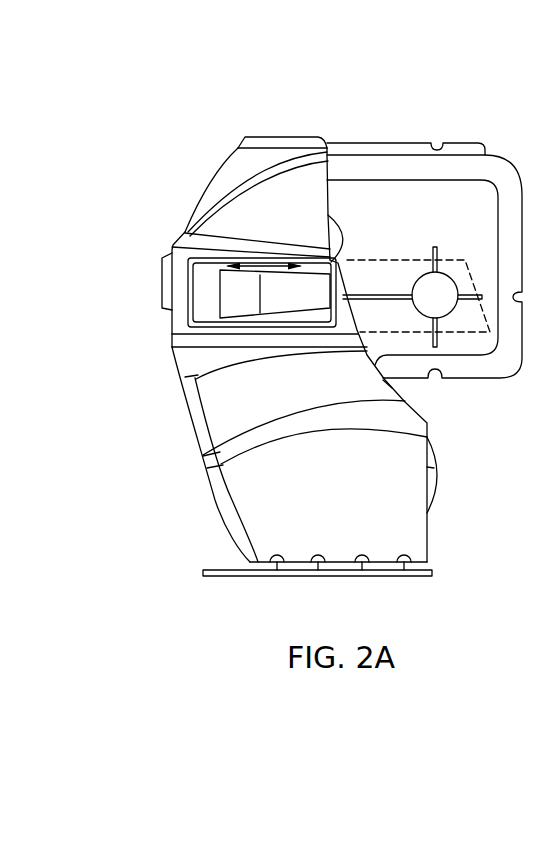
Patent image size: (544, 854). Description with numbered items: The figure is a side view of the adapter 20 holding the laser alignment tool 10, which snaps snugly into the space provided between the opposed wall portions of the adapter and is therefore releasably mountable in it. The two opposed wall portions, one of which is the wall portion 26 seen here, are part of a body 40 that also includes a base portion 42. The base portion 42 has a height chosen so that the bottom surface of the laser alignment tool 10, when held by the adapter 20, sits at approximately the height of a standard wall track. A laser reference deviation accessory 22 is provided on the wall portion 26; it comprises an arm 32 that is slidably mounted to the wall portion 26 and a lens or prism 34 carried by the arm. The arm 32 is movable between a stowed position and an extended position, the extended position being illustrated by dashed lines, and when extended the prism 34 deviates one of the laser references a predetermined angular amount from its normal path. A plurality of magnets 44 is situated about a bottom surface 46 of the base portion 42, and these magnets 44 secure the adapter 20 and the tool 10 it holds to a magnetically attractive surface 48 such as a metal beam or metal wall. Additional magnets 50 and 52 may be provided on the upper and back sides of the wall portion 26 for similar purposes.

The laser alignment tool 10 is at (503, 158).
The adapter 20 is at (203, 162).
The laser reference deviation accessory 22 is at (186, 324).
The wall portion 26 is at (295, 219).
The arm 32 is at (203, 279).
The prism 34 is at (293, 298).
The body 40 is at (222, 518).
The base portion 42 is at (428, 513).
The magnets 44 is at (278, 574).
The bottom surface 46 is at (252, 578).
The magnetically attractive surface 48 is at (207, 570).
The additional magnet 50 is at (281, 137).
The additional magnet 52 is at (163, 302).